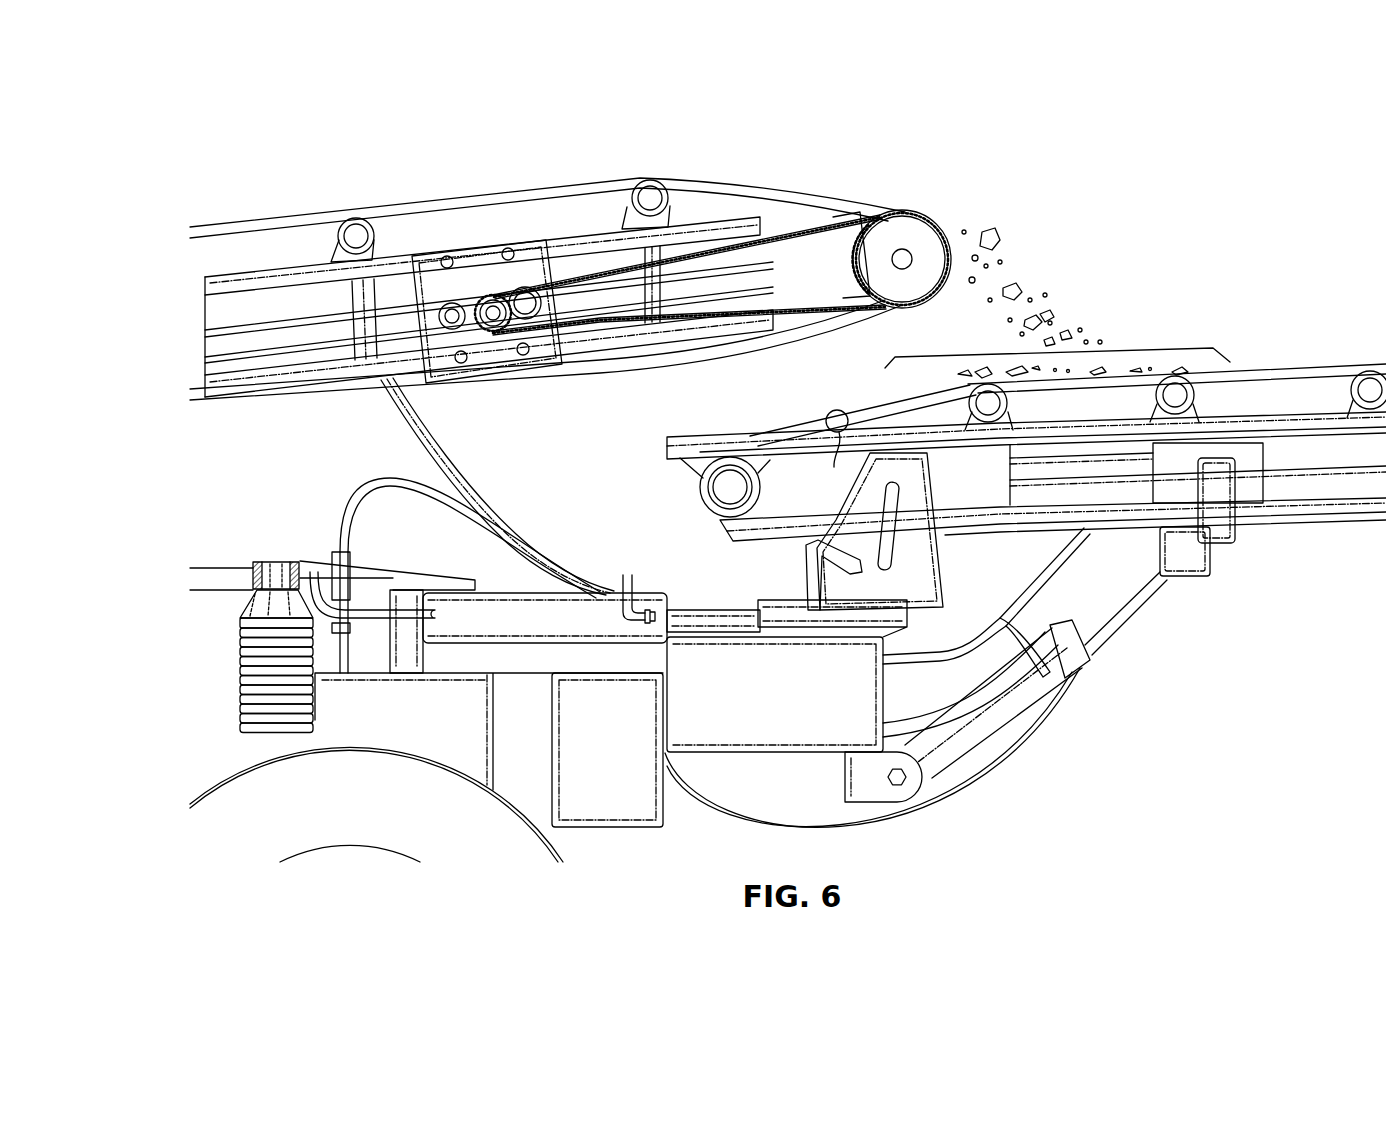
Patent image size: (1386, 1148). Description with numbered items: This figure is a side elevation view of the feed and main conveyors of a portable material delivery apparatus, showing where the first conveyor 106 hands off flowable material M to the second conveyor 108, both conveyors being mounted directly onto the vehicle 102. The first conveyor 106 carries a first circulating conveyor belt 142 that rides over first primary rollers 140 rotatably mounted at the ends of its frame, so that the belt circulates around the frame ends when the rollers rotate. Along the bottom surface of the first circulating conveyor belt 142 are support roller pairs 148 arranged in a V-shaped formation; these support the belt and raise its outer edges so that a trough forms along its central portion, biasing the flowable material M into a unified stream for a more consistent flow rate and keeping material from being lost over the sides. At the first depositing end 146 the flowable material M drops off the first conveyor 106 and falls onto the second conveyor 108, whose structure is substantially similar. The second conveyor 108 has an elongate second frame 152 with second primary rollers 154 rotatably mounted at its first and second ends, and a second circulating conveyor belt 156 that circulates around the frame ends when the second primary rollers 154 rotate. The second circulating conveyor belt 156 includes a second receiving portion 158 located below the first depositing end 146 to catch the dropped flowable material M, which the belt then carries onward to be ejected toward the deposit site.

The vehicle 102 is at (600, 582).
The first conveyor 106 is at (821, 186).
The second conveyor 108 is at (1268, 358).
The first primary rollers 140 is at (916, 247).
The first circulating conveyor belt 142 is at (466, 199).
The first depositing end 146 is at (943, 218).
The support roller pairs 148 is at (360, 230).
The second frame 152 is at (1326, 514).
The second primary rollers 154 is at (727, 482).
The second circulating conveyor belt 156 is at (1330, 368).
The second receiving portion 158 is at (1114, 350).
The flowable material M is at (992, 240).